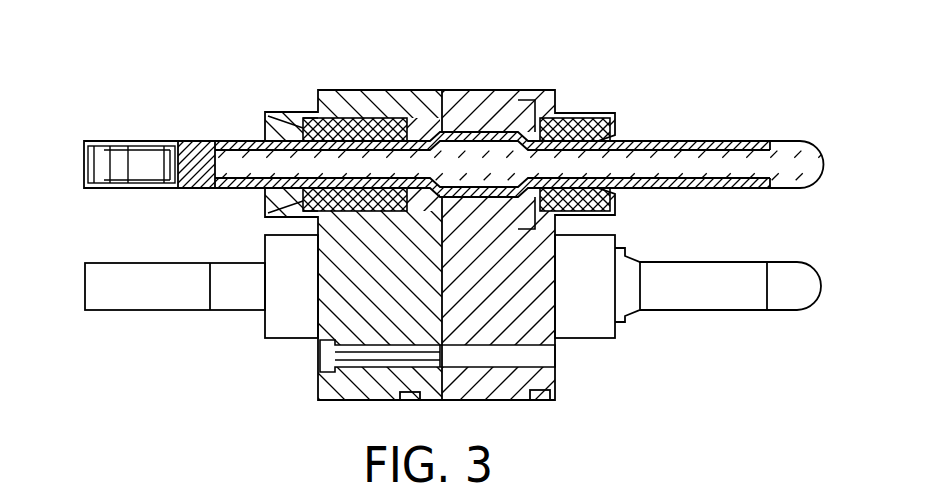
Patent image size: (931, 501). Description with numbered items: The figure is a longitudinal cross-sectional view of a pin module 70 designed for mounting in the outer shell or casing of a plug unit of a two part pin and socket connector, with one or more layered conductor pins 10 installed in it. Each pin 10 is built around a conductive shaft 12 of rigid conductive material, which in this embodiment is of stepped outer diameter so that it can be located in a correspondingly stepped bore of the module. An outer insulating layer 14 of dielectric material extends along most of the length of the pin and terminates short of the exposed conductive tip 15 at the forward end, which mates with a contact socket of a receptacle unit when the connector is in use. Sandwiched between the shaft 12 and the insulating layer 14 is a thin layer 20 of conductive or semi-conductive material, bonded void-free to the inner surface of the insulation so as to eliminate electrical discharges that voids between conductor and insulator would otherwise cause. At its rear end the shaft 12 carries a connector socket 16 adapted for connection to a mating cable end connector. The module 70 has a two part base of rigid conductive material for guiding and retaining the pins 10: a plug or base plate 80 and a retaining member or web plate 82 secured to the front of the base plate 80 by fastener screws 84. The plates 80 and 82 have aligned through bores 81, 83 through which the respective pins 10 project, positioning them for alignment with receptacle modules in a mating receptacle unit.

The conductor pin 10 is at (460, 189).
The conductive shaft 12 is at (255, 165).
The outer insulating layer 14 is at (723, 283).
The conductive tip 15 is at (782, 175).
The connector socket 16 is at (142, 165).
The conductive or semi-conductive layer 20 is at (645, 143).
The pin module 70 is at (462, 253).
The base plate 80 is at (367, 287).
The through bore 81 is at (407, 95).
The web plate 82 is at (523, 305).
The through bore 83 is at (523, 133).
The fastener screw 84 is at (548, 397).